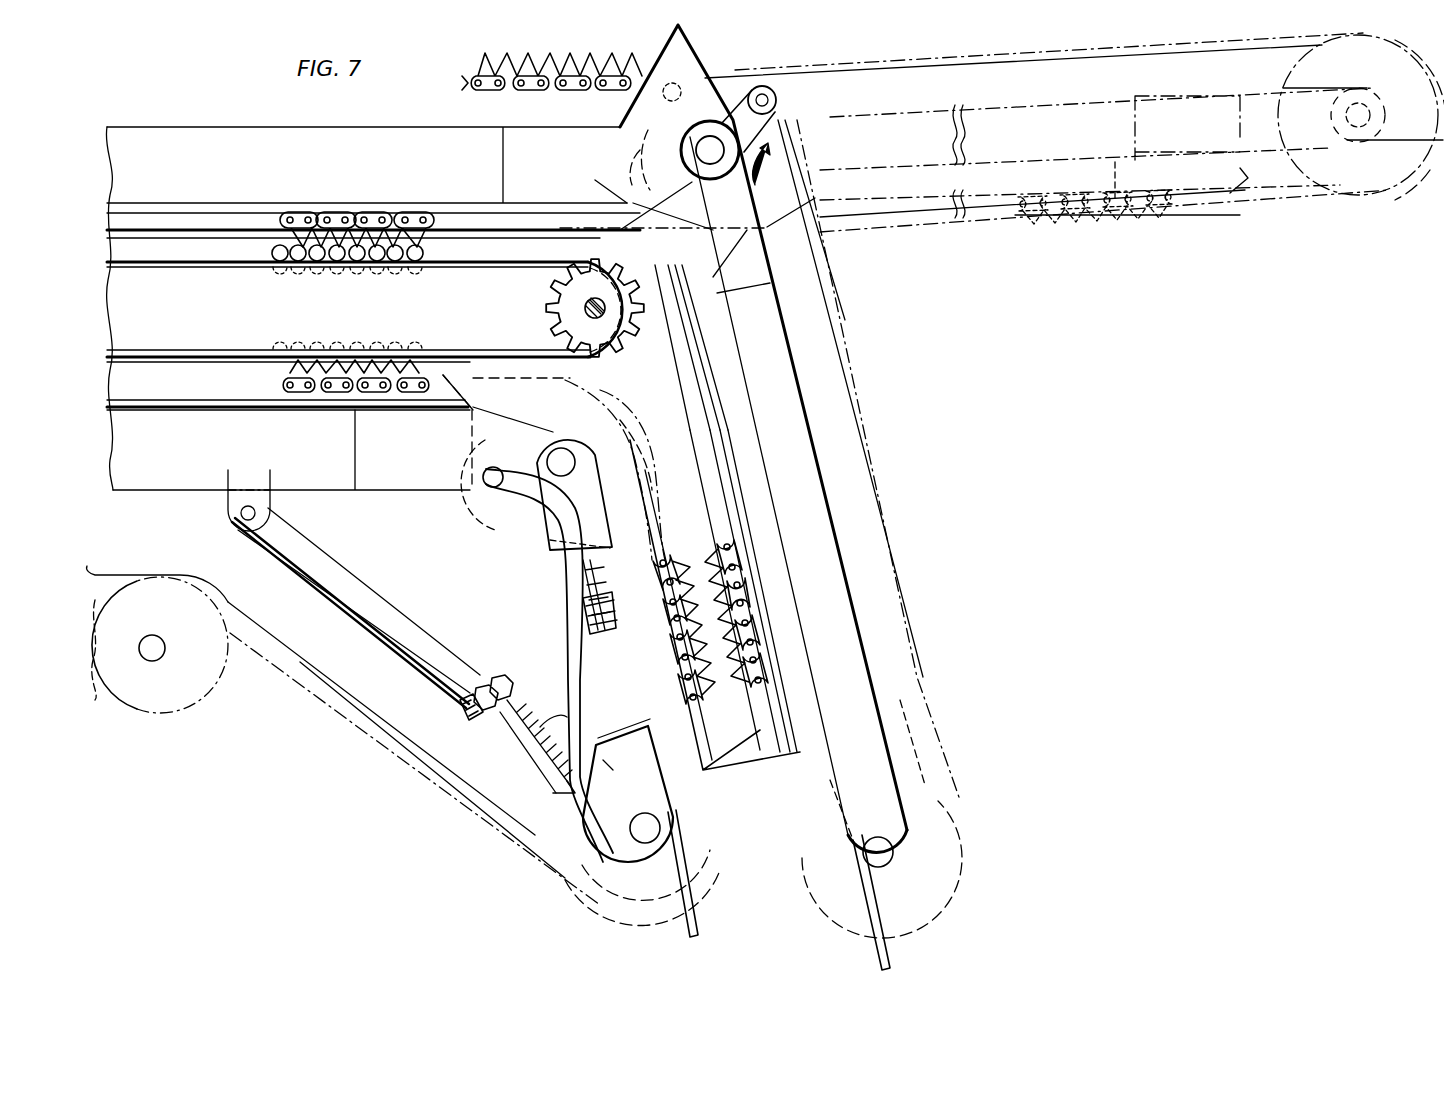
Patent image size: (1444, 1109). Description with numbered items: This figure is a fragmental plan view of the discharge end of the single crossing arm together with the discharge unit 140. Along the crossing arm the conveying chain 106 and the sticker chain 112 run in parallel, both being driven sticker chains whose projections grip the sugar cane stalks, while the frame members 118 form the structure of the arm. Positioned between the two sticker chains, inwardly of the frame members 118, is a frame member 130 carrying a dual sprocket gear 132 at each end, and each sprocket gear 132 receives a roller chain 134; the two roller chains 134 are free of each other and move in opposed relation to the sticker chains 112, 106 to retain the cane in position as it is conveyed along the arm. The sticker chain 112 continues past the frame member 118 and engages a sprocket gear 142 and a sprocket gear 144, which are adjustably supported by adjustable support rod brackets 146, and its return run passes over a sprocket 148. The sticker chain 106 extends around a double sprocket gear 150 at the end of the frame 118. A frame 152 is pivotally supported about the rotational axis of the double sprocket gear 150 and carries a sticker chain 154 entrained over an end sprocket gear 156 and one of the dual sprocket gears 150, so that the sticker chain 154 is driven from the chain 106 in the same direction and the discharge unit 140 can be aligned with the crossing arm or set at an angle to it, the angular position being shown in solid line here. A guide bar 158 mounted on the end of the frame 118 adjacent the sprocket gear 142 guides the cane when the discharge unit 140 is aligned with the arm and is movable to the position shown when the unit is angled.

The conveying chain 106 is at (380, 218).
The sticker chain 112 is at (415, 387).
The frame member 118 is at (222, 137).
The frame member 130 is at (232, 319).
The dual sprocket gear 132 is at (583, 302).
The roller chain 134 is at (360, 260).
The discharge unit 140 is at (893, 460).
The sprocket gear 142 is at (522, 508).
The sprocket gear 144 is at (662, 896).
The adjustable support rod brackets 146 is at (463, 677).
The sprocket 148 is at (205, 675).
The double sprocket gear 150 is at (775, 128).
The frame 152 is at (810, 590).
The sticker chain 154 is at (750, 682).
The end sprocket gear 156 is at (930, 862).
The guide bar 158 is at (527, 747).